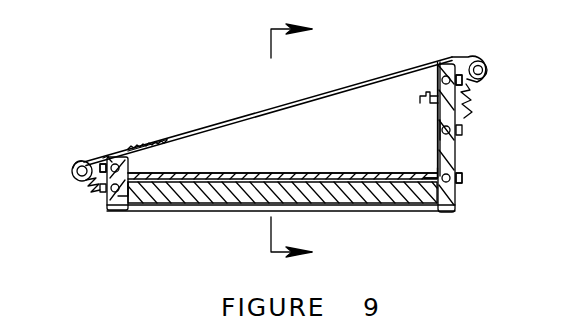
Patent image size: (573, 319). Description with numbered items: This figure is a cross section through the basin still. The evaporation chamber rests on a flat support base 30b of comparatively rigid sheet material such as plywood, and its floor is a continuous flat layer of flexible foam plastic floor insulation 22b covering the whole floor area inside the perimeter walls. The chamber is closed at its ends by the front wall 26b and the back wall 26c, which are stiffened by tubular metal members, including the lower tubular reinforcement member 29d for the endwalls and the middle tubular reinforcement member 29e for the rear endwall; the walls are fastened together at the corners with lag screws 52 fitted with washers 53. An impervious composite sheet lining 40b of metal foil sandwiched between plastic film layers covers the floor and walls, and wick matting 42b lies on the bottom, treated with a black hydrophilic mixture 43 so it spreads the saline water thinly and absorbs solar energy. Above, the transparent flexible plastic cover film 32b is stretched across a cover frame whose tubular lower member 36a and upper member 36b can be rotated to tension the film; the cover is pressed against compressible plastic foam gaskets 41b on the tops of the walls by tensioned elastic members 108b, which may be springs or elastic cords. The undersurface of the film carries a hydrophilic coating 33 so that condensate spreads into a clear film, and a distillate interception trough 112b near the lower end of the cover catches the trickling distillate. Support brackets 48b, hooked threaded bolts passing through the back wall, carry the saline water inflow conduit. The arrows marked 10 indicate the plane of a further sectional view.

The section line 10- 10 is at (309, 142).
The floor insulation 22b is at (380, 195).
The front wall of evaporation chamber 26b is at (125, 178).
The back wall of evaporation chamber 26c is at (455, 140).
The lower tubular metal reinforcement member for endwalls 29d is at (434, 174).
The middle tubular metal reinforcement member for rear endwall 29e is at (438, 133).
The flat support base 30b is at (440, 211).
The transparent flexible plastic cover film 32b is at (205, 124).
The hydrophylic coating 33 is at (185, 135).
The lower member of cover frame 36a is at (57, 164).
The upper member of cover frame 36b is at (481, 60).
The impervious composite sheet lining 40b is at (290, 173).
The gasket of compressible plastic foam 41b is at (110, 158).
The wick matting 42b is at (282, 152).
The black hydrophylic mixture 43 is at (352, 172).
The support brackets for inflow distribution conduit 48b is at (420, 100).
The lag screws 52 is at (289, 154).
The washers 53 is at (103, 190).
The tensioned elastic members 108b is at (95, 189).
The distillate interception trough 112b is at (160, 142).